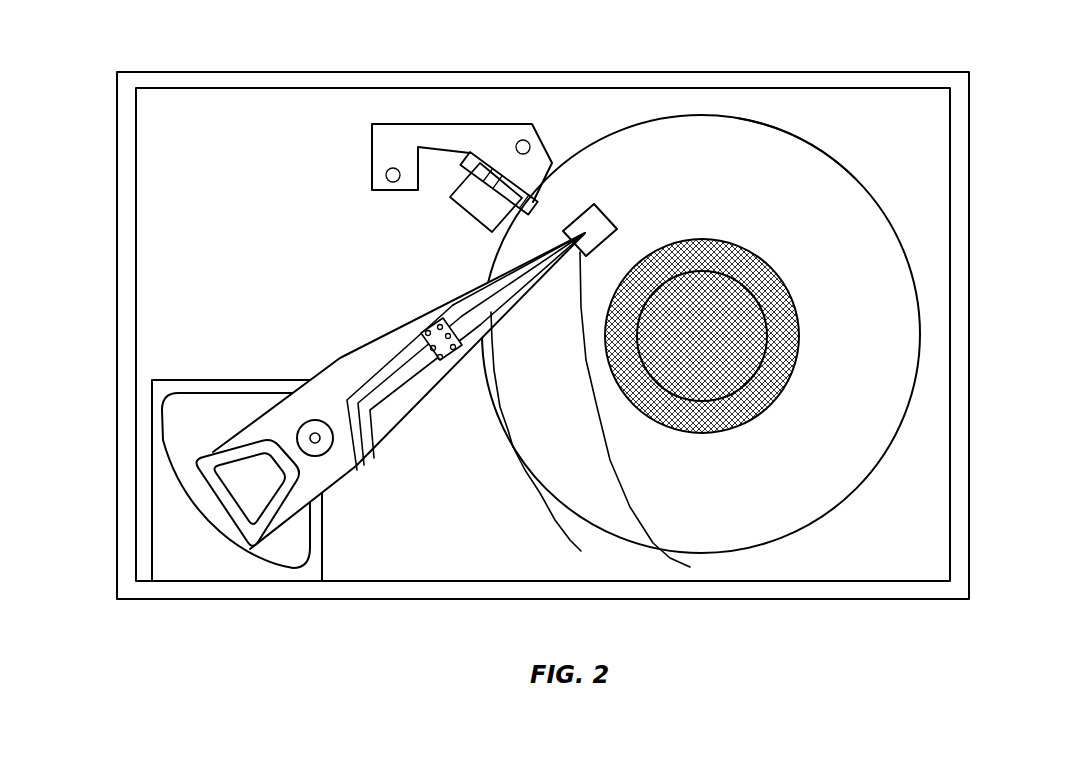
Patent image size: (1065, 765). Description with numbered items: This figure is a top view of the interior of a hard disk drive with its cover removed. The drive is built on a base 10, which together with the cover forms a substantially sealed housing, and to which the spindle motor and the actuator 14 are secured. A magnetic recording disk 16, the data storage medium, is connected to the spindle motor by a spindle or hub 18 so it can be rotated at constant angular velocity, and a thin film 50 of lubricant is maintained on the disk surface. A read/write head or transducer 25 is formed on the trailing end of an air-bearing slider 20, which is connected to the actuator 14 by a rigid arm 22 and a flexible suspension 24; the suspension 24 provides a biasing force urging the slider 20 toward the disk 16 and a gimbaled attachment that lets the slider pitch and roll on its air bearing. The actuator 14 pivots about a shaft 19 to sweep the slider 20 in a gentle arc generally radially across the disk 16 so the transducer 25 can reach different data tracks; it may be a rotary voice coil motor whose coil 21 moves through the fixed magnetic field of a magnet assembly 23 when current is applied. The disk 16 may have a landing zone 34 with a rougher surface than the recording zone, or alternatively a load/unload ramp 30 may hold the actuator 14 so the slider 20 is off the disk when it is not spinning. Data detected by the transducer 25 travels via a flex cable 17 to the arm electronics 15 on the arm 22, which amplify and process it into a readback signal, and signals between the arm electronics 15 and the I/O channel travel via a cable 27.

The base 10 is at (962, 164).
The actuator 14 is at (187, 567).
The arm electronics 15 is at (418, 335).
The magnetic recording disk 16 is at (918, 408).
The flex cable 17 is at (463, 298).
The spindle or hub 18 is at (740, 318).
The shaft 19 is at (312, 420).
The air-bearing slider 20 is at (593, 216).
The coil 21 is at (200, 466).
The rigid arm 22 is at (392, 428).
The magnet assembly 23 is at (207, 513).
The flexible suspension 24 is at (550, 438).
The read/write head or transducer 25 is at (653, 416).
The cable 27 is at (354, 458).
The load/unload ramp 30 is at (507, 190).
The landing zone 34 is at (790, 345).
The thin film of lubricant 50 is at (794, 156).